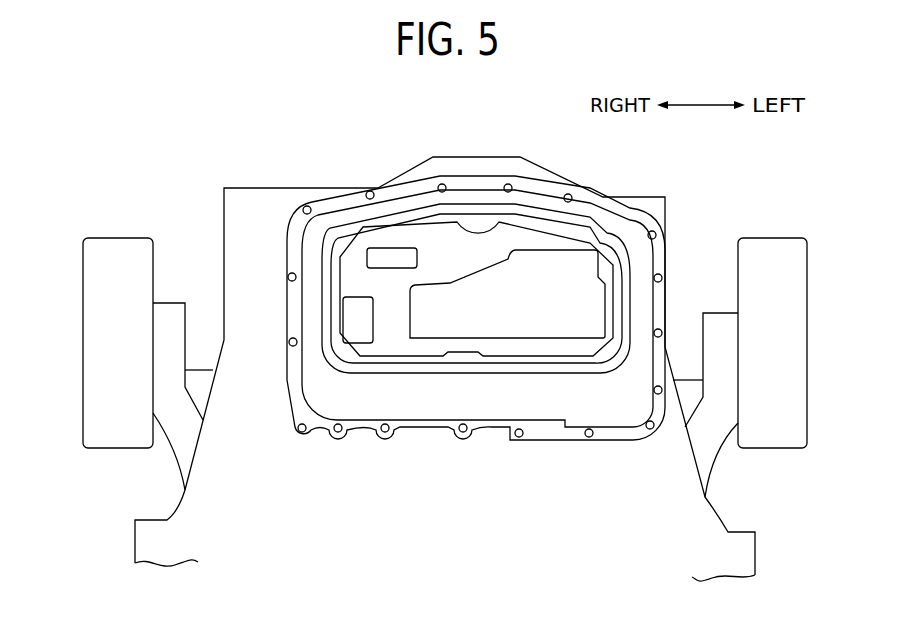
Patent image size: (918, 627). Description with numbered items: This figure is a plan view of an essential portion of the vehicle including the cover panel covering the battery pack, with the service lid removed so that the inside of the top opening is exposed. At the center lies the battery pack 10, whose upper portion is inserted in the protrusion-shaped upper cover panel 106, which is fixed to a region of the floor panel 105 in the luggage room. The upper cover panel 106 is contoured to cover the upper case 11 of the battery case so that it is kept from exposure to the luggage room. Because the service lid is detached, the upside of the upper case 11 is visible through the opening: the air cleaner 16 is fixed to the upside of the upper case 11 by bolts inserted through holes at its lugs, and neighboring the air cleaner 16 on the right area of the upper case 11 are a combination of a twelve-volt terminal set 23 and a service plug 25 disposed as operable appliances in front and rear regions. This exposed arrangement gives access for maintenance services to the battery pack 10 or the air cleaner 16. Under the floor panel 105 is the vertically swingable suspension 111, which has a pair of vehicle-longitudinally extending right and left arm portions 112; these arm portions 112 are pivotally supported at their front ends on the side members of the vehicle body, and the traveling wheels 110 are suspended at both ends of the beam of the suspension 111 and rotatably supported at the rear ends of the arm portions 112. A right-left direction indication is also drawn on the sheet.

The battery pack 10 is at (445, 245).
The upper case 11 is at (503, 245).
The air cleaner 16 is at (547, 316).
The 12-volt terminal set 23 is at (365, 340).
The service plug 25 is at (395, 255).
The floor panel 105 is at (482, 521).
The upper cover panel 106 is at (328, 218).
The traveling wheels 110 is at (119, 242).
The suspension 111 is at (716, 262).
The arm portions 112 is at (170, 306).